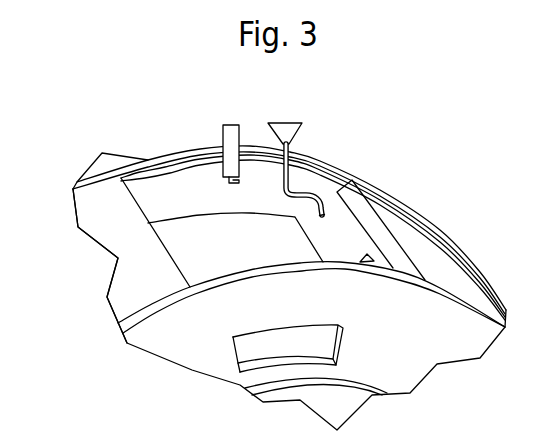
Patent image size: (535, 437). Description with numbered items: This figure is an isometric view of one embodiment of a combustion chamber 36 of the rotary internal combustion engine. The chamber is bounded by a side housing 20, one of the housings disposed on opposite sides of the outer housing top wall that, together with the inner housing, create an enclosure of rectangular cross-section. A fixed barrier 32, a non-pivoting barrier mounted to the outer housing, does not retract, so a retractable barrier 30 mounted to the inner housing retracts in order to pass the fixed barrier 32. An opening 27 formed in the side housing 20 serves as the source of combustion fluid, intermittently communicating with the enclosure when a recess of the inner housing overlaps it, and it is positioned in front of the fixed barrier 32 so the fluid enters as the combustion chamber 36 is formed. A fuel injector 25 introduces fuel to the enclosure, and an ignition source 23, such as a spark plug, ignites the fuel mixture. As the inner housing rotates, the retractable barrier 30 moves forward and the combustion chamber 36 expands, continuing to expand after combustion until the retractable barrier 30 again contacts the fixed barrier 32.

The side housing 20 is at (421, 334).
The ignition source 23 is at (231, 125).
The fuel injector 25 is at (284, 123).
The opening 27 is at (288, 340).
The retractable barrier 30 is at (373, 220).
The fixed barrier 32 is at (100, 208).
The combustion chamber 36 is at (203, 228).